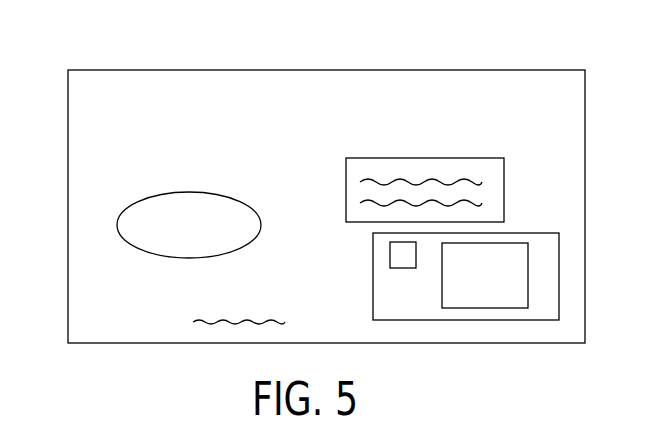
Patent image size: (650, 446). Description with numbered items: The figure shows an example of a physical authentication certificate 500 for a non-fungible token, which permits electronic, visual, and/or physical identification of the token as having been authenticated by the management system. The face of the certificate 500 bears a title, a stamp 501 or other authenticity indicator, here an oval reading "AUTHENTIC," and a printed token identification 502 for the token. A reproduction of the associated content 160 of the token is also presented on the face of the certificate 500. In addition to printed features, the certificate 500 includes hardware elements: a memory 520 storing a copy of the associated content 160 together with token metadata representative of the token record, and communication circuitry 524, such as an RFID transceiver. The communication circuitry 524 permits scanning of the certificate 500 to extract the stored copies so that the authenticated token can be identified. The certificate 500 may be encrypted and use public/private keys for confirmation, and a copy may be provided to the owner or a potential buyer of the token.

The physical authentication certificate 500 is at (144, 70).
The stamp 501 is at (125, 217).
The printed token identification 502 is at (122, 343).
The associated content 160 is at (505, 184).
The memory 520 is at (390, 254).
The communication circuitry 524 is at (485, 308).